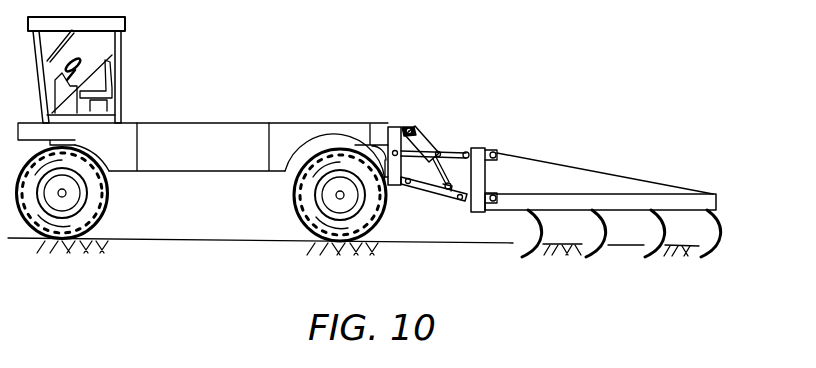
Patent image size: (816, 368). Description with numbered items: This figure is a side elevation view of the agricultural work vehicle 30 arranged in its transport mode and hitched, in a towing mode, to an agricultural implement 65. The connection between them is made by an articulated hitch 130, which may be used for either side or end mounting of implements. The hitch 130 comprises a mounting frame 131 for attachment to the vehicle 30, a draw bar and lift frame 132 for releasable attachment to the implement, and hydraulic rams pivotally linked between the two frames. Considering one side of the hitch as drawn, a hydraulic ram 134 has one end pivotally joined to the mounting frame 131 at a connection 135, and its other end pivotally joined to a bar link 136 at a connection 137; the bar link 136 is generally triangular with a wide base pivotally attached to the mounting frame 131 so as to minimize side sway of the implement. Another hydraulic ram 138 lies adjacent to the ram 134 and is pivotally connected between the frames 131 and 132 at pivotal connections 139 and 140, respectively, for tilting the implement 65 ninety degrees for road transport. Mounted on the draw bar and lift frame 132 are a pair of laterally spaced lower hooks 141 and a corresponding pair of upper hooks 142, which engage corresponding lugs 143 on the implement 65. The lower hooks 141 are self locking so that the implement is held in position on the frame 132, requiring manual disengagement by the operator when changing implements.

The agricultural work vehicle 30 is at (195, 180).
The implement 65 is at (603, 198).
The articulated hitch 130 is at (450, 171).
The mounting frame 131 is at (397, 127).
The draw bar and lift frame 132 is at (476, 146).
The hydraulic ram 134 is at (427, 136).
The connection 135 is at (411, 127).
The bar link 136 is at (455, 203).
The connection 137 is at (434, 200).
The hydraulic ram 138 is at (452, 142).
The pivotal connection 139 is at (371, 145).
The pivotal connection 140 is at (468, 146).
The lower hooks 141 is at (487, 212).
The upper hooks 142 is at (507, 170).
The lugs 143 is at (493, 150).